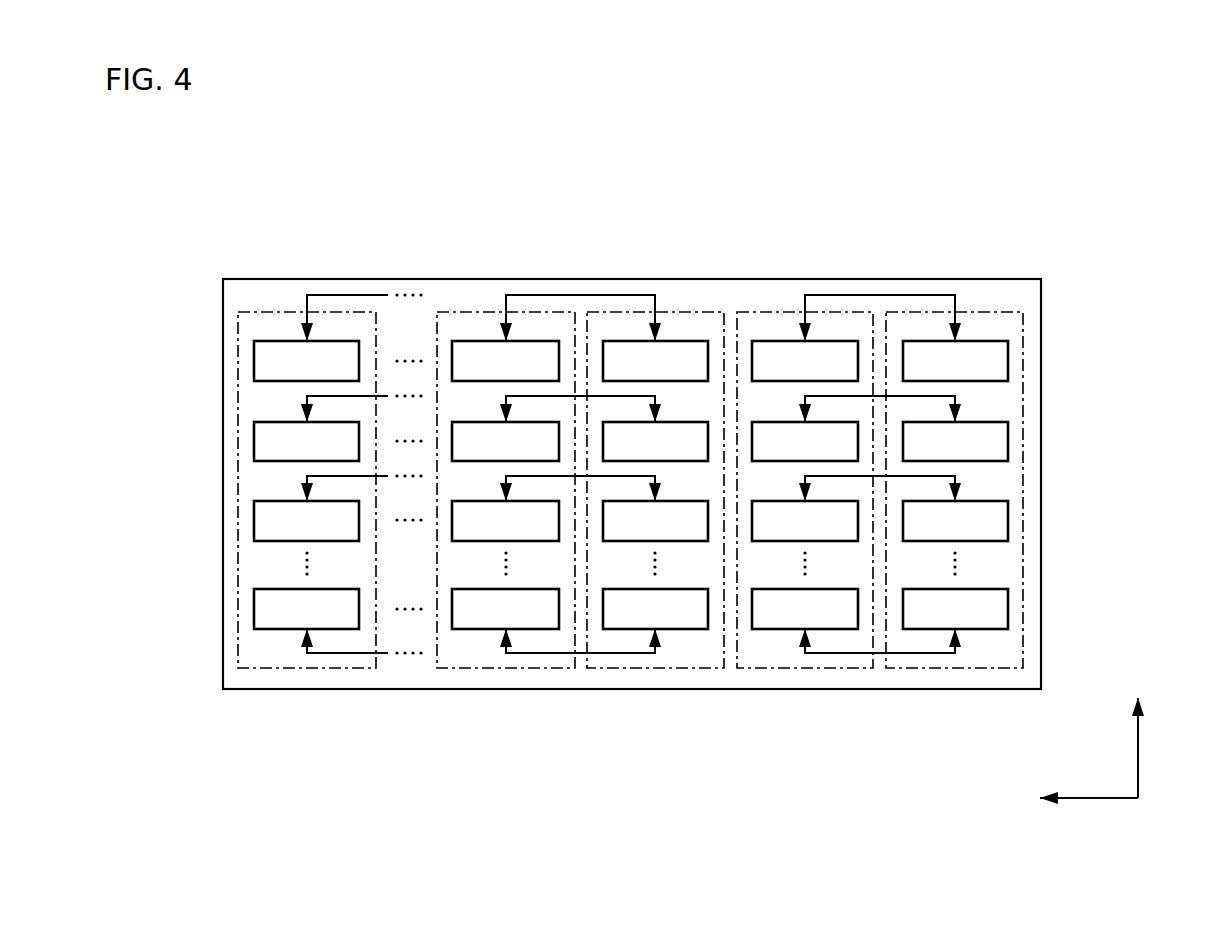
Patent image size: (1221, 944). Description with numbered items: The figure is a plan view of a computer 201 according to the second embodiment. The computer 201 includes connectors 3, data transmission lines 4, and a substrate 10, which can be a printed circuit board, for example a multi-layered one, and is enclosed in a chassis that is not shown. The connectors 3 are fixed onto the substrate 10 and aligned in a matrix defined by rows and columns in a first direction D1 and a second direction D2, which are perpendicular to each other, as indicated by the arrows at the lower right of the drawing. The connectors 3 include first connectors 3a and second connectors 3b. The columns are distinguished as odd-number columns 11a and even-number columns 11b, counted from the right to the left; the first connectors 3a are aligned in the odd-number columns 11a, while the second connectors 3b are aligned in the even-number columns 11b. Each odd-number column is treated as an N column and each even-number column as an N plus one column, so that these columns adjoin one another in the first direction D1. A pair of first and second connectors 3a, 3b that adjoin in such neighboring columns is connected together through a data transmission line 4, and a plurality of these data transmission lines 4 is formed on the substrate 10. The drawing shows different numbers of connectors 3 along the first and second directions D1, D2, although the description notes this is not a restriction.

The computer 201 is at (1000, 186).
The substrate 10 is at (1012, 278).
The odd-number column 11a is at (615, 310).
The even-number column 11b is at (246, 310).
The connector 3 is at (648, 488).
The first connector 3a is at (668, 442).
The second connector 3b is at (280, 355).
The data transmission line 4 is at (345, 295).
The first direction D1 is at (1095, 800).
The second direction D2 is at (1140, 748).